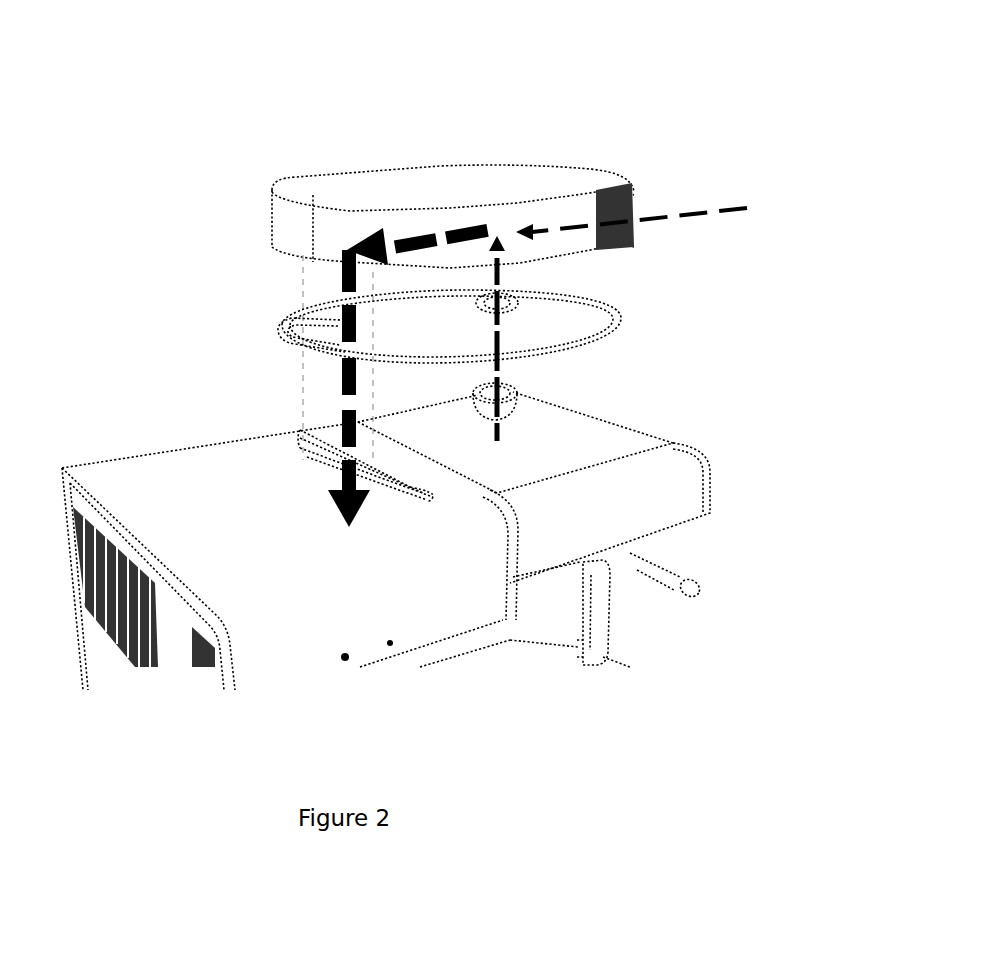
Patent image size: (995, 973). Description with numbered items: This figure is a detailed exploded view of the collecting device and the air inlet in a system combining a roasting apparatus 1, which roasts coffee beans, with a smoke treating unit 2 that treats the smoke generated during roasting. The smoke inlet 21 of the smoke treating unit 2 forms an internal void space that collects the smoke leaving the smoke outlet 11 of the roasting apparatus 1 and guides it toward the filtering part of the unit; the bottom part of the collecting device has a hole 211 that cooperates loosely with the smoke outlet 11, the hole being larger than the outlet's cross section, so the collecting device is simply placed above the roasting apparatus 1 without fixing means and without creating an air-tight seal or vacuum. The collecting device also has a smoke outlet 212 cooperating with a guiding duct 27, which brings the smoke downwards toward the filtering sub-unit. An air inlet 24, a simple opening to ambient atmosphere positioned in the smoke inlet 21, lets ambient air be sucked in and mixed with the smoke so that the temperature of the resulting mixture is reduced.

The roasting apparatus 1 is at (748, 447).
The smoke treating unit 2 is at (65, 130).
The smoke outlet 11 is at (513, 397).
The smoke inlet 21 is at (617, 313).
The hole 211 is at (508, 305).
The smoke outlet 212 is at (337, 340).
The air inlet 24 is at (633, 187).
The guiding duct 27 is at (330, 453).